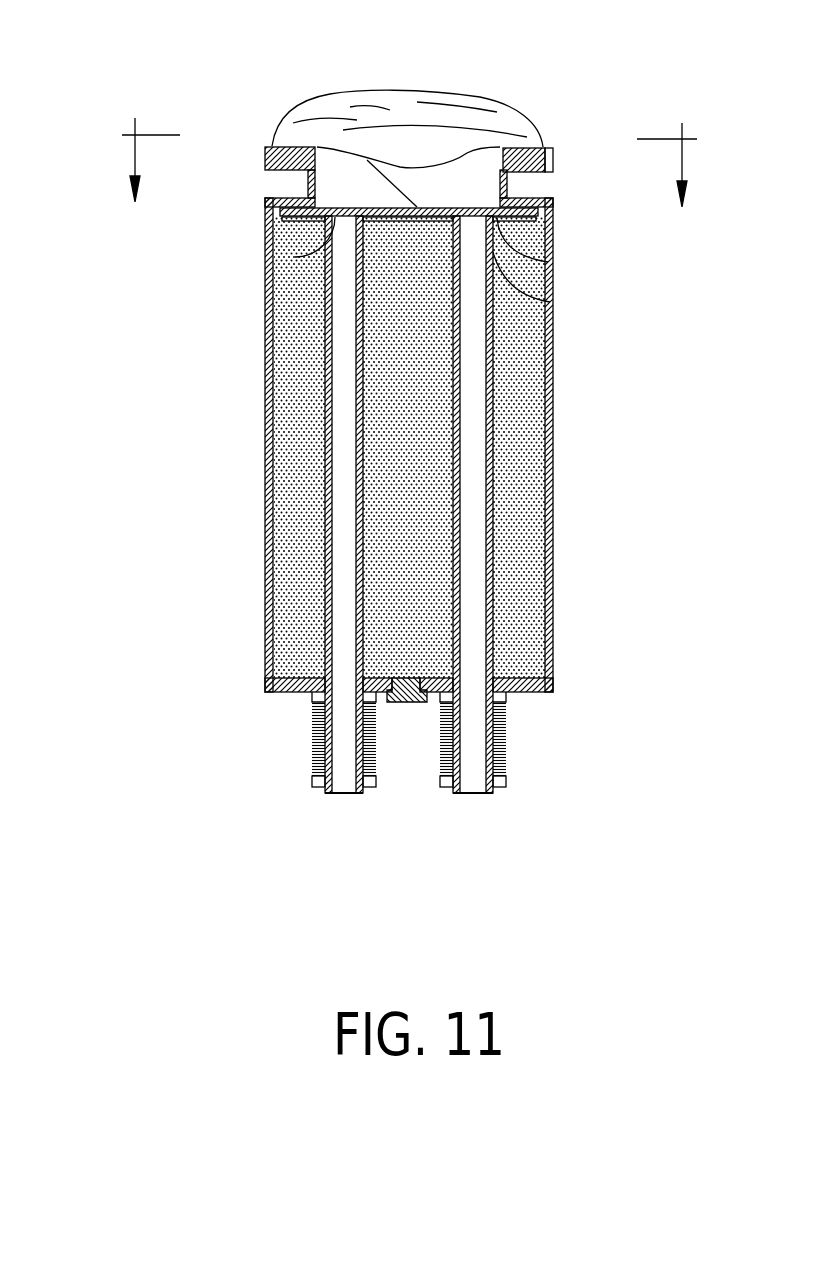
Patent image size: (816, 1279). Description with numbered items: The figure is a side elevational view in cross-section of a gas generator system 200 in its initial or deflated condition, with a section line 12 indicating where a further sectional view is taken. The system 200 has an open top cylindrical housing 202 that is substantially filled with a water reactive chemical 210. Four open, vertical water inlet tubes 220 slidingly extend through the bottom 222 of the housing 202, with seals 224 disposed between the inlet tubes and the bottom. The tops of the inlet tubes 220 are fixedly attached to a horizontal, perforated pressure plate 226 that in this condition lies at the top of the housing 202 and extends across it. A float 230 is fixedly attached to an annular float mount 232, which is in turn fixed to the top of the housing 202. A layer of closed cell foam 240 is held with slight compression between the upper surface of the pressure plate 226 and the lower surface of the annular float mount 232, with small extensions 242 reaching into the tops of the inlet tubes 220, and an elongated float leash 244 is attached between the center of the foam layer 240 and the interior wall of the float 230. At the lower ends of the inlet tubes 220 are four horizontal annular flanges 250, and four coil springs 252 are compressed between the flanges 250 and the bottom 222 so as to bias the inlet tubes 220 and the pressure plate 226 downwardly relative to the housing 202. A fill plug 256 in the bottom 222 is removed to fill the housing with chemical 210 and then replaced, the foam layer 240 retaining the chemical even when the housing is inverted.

The gas generator system 200 is at (202, 474).
The section line 12- 12 is at (409, 185).
The housing 202 is at (548, 458).
The water reactive chemical 210 is at (538, 614).
The water inlet tubes 220 is at (325, 793).
The bottom 222 is at (530, 697).
The seals 224 is at (310, 695).
The pressure plate 226 is at (553, 258).
The float 230 is at (452, 104).
The annular float mount 232 is at (530, 150).
The closed cell foam layer 240 is at (333, 207).
The extensions 242 is at (292, 258).
The float leash 244 is at (398, 178).
The annular flanges 250 is at (312, 782).
The coil springs 252 is at (313, 727).
The fill plug 256 is at (400, 703).